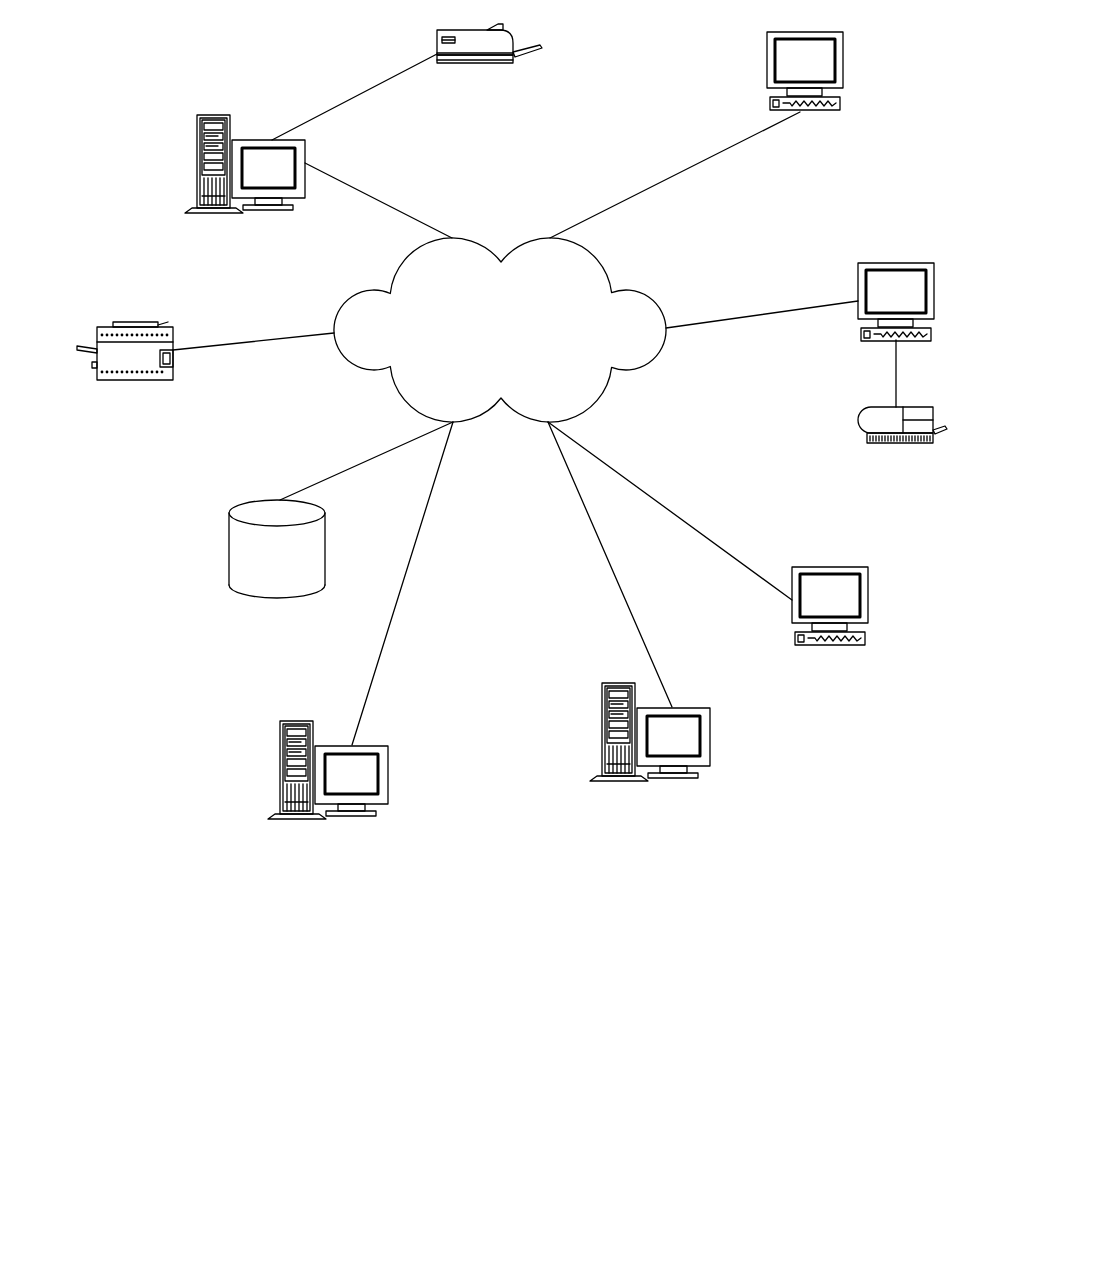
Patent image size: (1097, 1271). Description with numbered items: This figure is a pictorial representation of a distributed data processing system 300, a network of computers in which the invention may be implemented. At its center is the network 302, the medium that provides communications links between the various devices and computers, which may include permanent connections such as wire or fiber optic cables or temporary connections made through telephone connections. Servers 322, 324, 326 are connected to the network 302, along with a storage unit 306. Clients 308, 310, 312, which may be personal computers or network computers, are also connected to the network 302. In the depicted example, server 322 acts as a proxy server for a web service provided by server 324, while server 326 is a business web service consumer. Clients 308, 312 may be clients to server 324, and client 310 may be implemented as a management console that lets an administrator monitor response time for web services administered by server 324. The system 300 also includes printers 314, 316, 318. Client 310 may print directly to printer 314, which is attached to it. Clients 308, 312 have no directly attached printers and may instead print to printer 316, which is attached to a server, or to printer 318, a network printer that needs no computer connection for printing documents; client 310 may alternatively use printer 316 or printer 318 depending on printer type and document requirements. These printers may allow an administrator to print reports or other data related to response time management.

The distributed data processing system 300 is at (506, 1037).
The network 302 is at (482, 341).
The storage unit 306 is at (253, 641).
The client 308 is at (789, 21).
The client 310 is at (875, 246).
The client 312 is at (809, 551).
The printer 314 is at (877, 476).
The printer 316 is at (455, 99).
The printer 318 is at (114, 409).
The server 322 is at (226, 241).
The server 324 is at (309, 846).
The server 326 is at (631, 809).